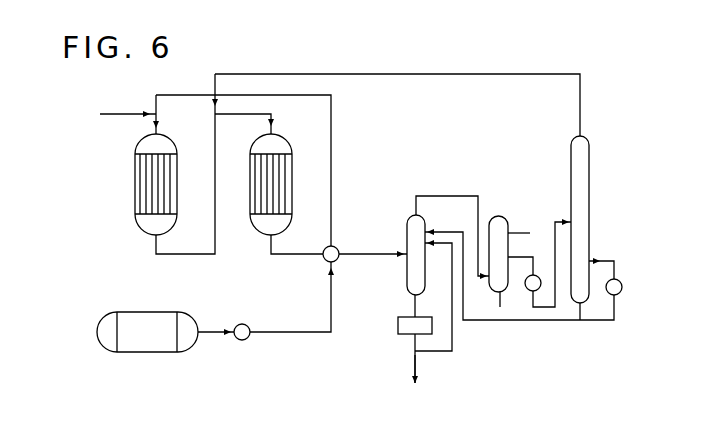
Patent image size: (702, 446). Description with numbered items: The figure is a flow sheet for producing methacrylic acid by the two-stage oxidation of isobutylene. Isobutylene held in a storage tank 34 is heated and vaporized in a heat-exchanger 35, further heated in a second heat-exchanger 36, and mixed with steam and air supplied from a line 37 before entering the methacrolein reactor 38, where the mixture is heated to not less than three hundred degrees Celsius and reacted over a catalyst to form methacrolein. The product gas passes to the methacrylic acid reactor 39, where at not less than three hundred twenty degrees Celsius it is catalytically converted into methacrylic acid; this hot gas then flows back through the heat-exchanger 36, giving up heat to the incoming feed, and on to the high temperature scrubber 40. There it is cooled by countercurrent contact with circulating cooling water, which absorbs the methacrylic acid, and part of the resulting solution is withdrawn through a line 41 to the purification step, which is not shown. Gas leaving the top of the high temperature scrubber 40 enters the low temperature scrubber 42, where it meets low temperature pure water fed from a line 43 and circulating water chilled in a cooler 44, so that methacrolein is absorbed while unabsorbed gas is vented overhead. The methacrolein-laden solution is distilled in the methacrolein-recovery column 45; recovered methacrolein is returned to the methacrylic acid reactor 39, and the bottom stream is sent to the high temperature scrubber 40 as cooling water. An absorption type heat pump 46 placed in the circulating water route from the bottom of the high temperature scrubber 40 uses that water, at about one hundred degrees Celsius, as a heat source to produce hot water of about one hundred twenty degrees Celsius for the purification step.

The storage tank 34 is at (165, 343).
The heat-exchanger 35 is at (247, 340).
The heat-exchanger 36 is at (326, 248).
The line 37 is at (119, 112).
The methacrolein reactor 38 is at (145, 147).
The methacrylic acid reactor 39 is at (283, 146).
The high temperature scrubber 40 is at (410, 240).
The line 41 is at (413, 366).
The low temperature scrubber 42 is at (500, 223).
The line 43 is at (525, 233).
The cooler 44 is at (533, 292).
The methacrolein-recovery column 45 is at (583, 170).
The absorption type heat pump 46 is at (403, 322).